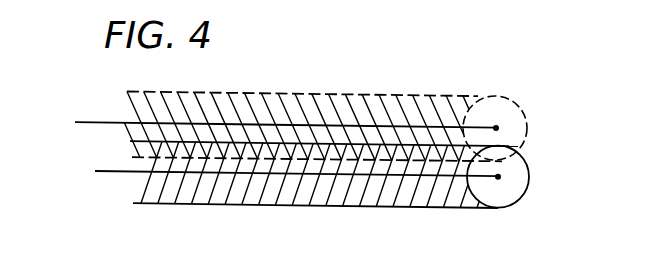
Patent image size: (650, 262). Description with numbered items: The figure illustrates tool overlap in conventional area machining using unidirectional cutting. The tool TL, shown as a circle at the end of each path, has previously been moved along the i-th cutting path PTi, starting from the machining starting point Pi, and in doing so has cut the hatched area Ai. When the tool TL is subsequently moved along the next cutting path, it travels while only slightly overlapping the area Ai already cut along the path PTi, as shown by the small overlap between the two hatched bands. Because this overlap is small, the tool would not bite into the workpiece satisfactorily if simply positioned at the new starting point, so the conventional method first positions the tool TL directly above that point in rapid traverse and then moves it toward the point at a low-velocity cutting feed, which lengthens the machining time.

The area already cut Ai is at (322, 199).
The i-th cutting path PTi is at (100, 172).
The tool TL is at (510, 187).
The machining starting point on the i-th cutting path Pi is at (498, 177).